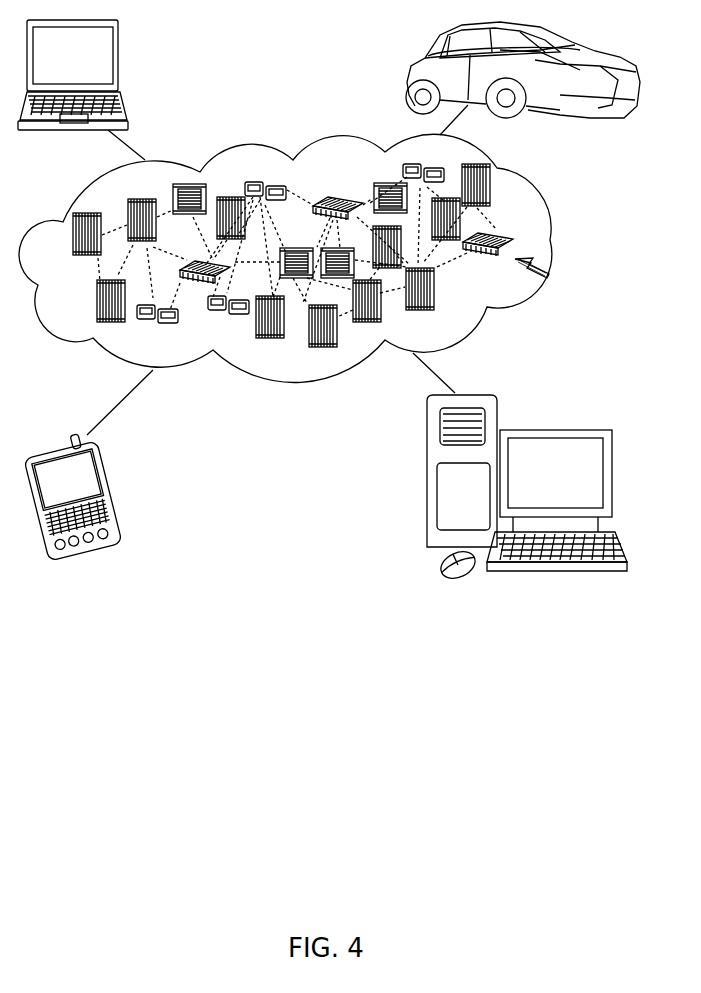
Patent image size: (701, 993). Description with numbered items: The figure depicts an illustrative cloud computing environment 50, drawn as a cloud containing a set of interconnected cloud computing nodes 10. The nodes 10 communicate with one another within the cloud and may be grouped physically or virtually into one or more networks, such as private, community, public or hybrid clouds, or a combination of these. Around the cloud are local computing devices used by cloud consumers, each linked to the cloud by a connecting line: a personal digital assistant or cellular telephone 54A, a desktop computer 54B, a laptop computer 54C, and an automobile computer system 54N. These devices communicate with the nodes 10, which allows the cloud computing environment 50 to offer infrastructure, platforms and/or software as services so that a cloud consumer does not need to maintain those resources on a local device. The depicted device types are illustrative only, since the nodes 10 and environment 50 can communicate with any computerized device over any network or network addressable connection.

The cloud computing nodes 10 is at (548, 277).
The cloud computing environment 50 is at (553, 243).
The personal digital assistant (PDA) or cellular telephone 54A is at (110, 493).
The desktop computer 54B is at (553, 430).
The laptop computer 54C is at (120, 63).
The automobile computer system 54N is at (412, 75).